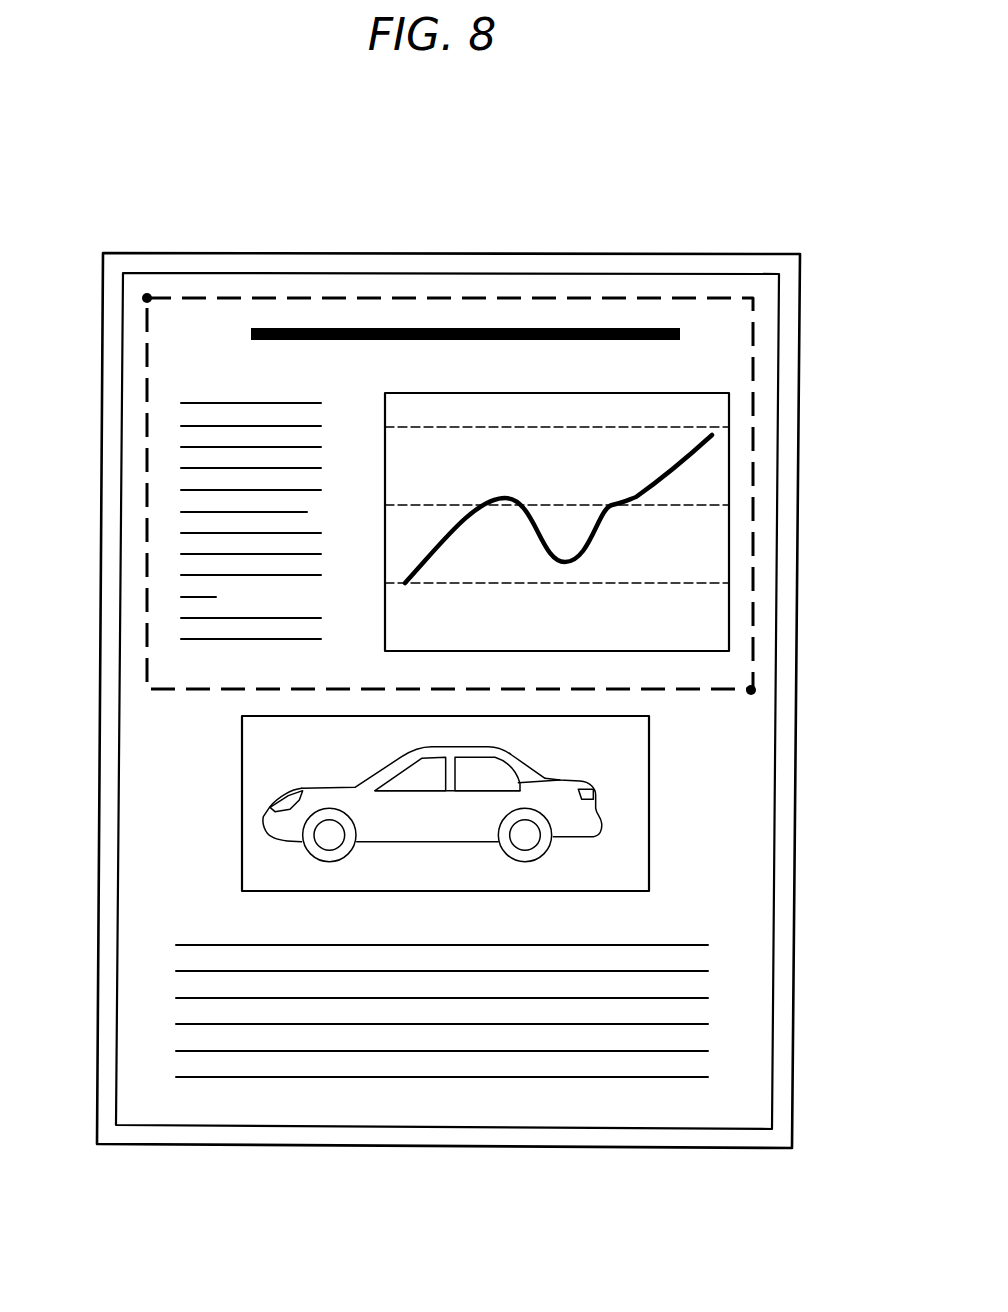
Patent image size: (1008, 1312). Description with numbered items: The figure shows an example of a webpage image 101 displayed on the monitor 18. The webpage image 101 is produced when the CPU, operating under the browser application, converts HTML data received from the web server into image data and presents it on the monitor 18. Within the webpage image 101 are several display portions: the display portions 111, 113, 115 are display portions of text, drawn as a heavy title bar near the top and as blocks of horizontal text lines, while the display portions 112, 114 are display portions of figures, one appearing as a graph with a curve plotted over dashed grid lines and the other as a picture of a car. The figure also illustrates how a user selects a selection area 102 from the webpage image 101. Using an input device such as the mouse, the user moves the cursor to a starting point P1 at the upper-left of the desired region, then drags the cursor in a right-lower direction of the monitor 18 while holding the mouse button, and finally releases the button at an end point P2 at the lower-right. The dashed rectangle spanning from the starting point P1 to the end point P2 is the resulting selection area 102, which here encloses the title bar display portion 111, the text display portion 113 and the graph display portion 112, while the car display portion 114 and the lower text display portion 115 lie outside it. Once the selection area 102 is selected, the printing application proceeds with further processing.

The monitor 18 is at (701, 252).
The webpage image 101 is at (577, 274).
The selection area 102 is at (670, 692).
The starting point P1 is at (147, 298).
The end point P2 is at (755, 690).
The display portion 111 is at (430, 328).
The display portion 112 is at (672, 392).
The display portion 113 is at (183, 437).
The display portion 114 is at (650, 846).
The display portion 115 is at (698, 988).